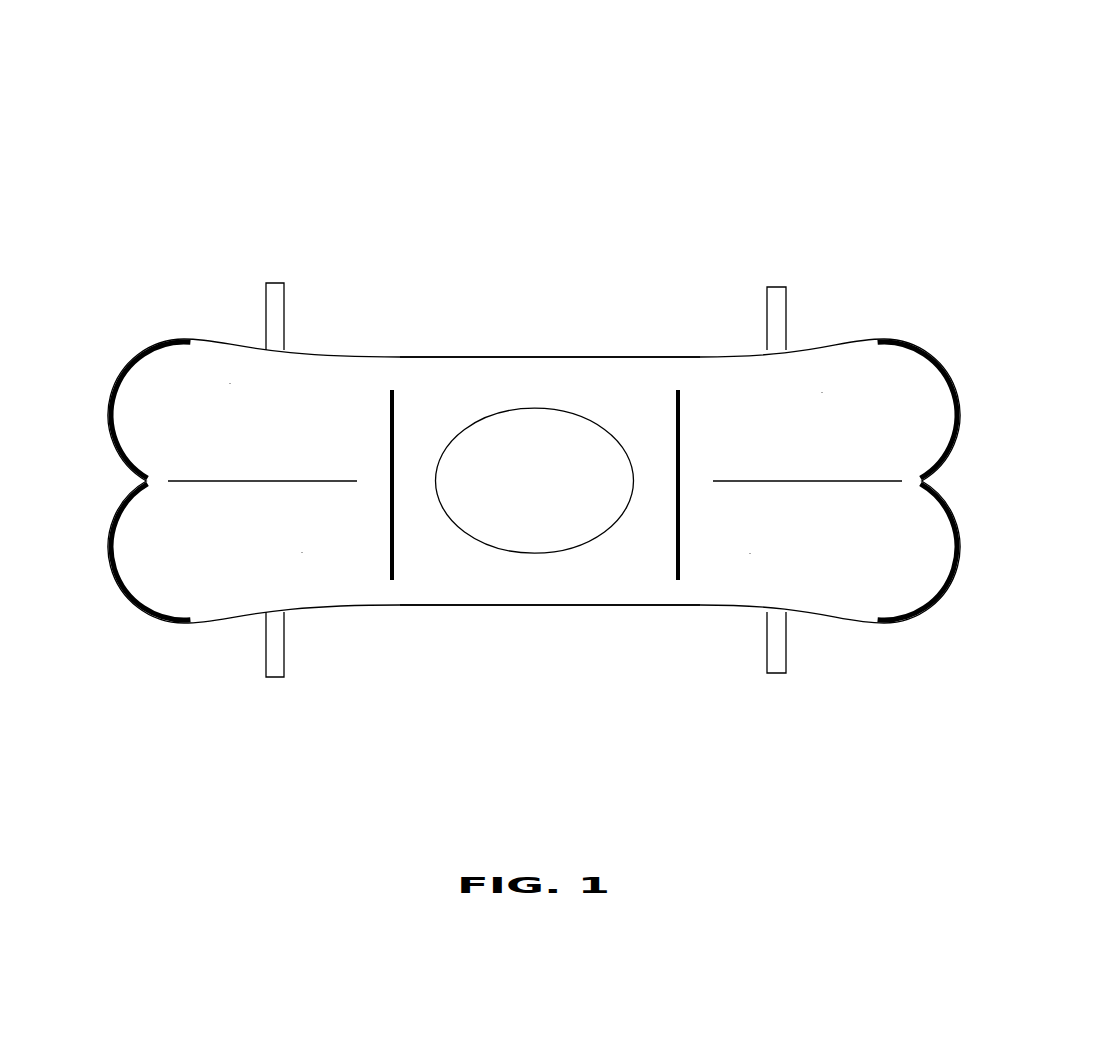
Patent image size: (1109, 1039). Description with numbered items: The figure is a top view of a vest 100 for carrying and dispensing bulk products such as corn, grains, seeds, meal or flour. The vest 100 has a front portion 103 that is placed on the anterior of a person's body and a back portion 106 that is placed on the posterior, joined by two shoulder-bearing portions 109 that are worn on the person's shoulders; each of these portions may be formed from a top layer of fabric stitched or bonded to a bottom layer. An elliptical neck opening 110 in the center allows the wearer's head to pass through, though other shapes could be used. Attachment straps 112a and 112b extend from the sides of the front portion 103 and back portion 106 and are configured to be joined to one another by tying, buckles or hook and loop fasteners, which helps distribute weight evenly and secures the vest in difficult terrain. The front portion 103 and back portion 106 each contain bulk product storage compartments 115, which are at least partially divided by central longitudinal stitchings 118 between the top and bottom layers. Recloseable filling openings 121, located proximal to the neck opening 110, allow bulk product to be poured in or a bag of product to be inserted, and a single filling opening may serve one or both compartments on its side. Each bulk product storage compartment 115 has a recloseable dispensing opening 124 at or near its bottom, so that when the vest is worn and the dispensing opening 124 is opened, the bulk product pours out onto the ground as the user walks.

The vest 100 is at (822, 177).
The front portion 103 is at (750, 695).
The back portion 106 is at (320, 695).
The shoulder-bearing portions 109 is at (530, 337).
The neck opening 110 is at (567, 455).
The attachment straps 112a is at (278, 300).
The attachment straps 112b is at (780, 300).
The bulk product storage compartments 115 is at (230, 383).
The central longitudinal stitchings 118 is at (238, 482).
The recloseable filling openings 121 is at (393, 427).
The recloseable dispensing opening 124 is at (167, 338).